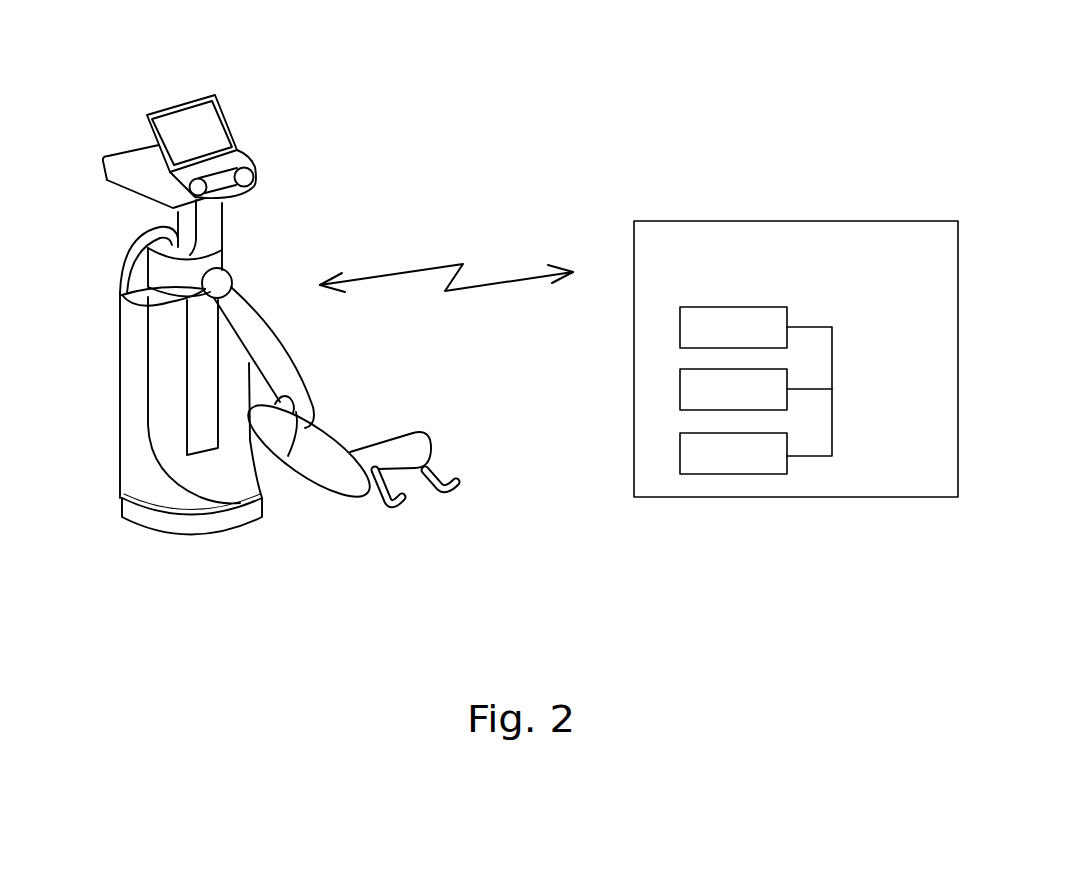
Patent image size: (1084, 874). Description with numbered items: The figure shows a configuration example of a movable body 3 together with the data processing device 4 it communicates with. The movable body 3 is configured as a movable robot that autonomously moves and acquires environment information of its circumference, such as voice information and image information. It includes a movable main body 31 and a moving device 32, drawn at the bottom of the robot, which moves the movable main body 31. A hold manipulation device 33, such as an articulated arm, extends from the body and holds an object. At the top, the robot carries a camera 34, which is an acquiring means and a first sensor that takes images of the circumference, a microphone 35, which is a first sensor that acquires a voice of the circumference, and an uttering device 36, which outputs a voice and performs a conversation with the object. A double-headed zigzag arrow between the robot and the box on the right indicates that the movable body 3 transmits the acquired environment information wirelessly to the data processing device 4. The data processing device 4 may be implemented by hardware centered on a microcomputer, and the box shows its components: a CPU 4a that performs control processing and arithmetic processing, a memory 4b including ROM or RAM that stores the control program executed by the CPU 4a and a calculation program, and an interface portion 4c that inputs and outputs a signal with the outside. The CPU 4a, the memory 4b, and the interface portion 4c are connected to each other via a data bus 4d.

The movable body 3 is at (97, 281).
The movable main body 31 is at (132, 342).
The moving device 32 is at (140, 515).
The hold manipulation device 33 is at (285, 365).
The camera 34 is at (257, 175).
The microphone 35 is at (155, 110).
The uttering device 36 is at (193, 115).
The data processing device 4 is at (872, 220).
The CPU 4a is at (680, 323).
The memory 4b is at (680, 390).
The interface portion 4c is at (680, 453).
The data bus 4d is at (833, 415).